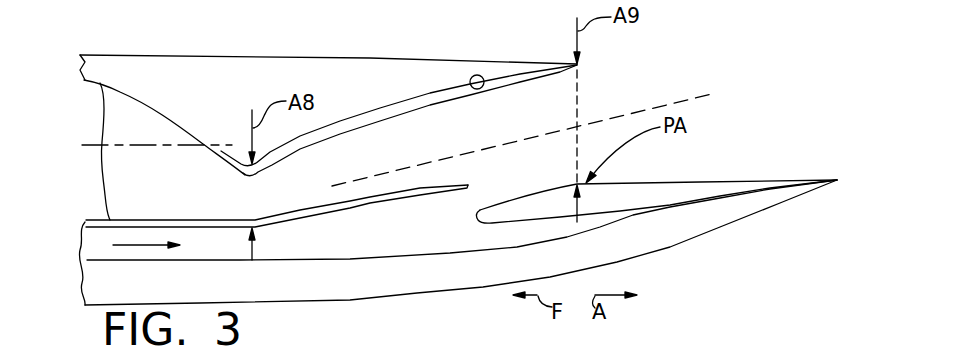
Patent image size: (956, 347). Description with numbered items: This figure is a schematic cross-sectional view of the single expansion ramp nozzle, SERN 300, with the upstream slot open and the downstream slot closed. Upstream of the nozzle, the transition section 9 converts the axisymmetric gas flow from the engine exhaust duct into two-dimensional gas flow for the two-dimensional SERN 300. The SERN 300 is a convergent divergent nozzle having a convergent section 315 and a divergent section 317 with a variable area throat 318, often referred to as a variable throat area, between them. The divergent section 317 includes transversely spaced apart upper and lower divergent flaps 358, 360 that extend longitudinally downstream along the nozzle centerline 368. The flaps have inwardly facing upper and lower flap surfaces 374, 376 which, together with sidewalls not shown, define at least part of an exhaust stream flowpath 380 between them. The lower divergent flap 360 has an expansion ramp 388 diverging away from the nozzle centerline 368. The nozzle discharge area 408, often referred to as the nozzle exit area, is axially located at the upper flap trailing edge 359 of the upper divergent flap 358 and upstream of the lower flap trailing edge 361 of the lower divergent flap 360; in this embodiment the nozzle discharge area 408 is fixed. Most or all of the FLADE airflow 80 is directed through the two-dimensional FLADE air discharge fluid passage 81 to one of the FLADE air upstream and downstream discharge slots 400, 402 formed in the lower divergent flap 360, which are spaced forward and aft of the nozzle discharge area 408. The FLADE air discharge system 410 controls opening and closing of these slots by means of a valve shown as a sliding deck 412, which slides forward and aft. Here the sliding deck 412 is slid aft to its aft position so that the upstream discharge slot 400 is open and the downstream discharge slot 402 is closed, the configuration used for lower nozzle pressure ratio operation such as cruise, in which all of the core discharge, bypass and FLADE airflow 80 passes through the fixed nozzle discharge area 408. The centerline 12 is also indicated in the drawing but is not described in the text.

The transition section 9 is at (122, 107).
The engine centerline axis 12 is at (167, 145).
The FLADE airflow 80 is at (138, 247).
The FLADE air discharge fluid passage 81 is at (356, 241).
The SERN 300 is at (421, 50).
The convergent section 315 is at (171, 188).
The divergent section 317 is at (378, 158).
The variable area throat 318 is at (260, 211).
The upper divergent flap 358 is at (504, 76).
The upper flap trailing edge 359 is at (580, 63).
The lower divergent flap 360 is at (463, 185).
The lower flap trailing edge 361 is at (838, 183).
The nozzle centerline 368 is at (690, 95).
The upper flap surface 374 is at (393, 116).
The lower flap surface 376 is at (344, 203).
The exhaust stream flowpath 380 is at (513, 115).
The expansion ramp 388 is at (467, 186).
The upstream discharge slot 400 is at (500, 188).
The downstream discharge slot 402 is at (763, 182).
The nozzle discharge area 408 is at (579, 85).
The FLADE air discharge system 410 is at (389, 272).
The sliding deck 412 is at (640, 183).